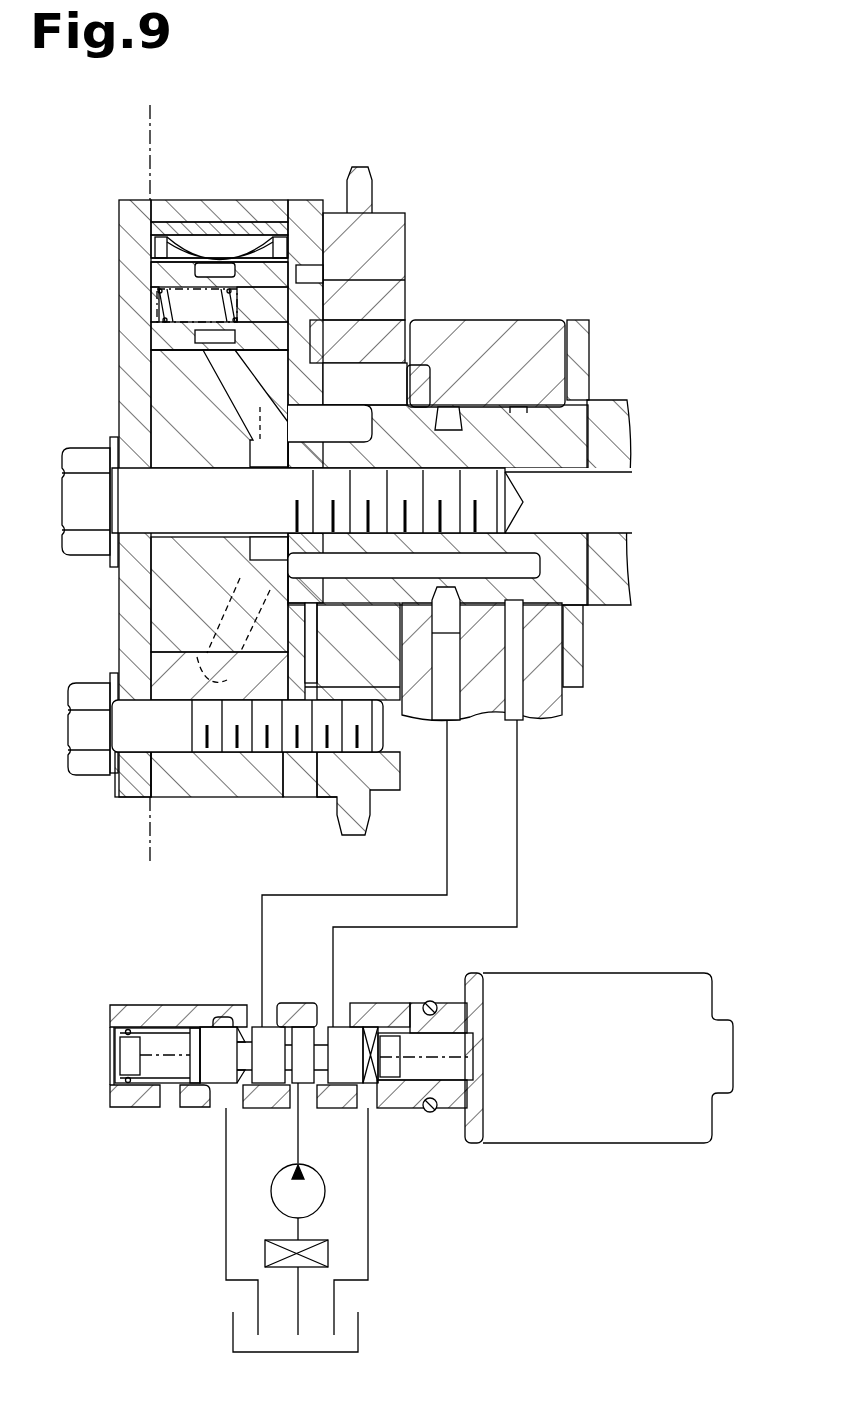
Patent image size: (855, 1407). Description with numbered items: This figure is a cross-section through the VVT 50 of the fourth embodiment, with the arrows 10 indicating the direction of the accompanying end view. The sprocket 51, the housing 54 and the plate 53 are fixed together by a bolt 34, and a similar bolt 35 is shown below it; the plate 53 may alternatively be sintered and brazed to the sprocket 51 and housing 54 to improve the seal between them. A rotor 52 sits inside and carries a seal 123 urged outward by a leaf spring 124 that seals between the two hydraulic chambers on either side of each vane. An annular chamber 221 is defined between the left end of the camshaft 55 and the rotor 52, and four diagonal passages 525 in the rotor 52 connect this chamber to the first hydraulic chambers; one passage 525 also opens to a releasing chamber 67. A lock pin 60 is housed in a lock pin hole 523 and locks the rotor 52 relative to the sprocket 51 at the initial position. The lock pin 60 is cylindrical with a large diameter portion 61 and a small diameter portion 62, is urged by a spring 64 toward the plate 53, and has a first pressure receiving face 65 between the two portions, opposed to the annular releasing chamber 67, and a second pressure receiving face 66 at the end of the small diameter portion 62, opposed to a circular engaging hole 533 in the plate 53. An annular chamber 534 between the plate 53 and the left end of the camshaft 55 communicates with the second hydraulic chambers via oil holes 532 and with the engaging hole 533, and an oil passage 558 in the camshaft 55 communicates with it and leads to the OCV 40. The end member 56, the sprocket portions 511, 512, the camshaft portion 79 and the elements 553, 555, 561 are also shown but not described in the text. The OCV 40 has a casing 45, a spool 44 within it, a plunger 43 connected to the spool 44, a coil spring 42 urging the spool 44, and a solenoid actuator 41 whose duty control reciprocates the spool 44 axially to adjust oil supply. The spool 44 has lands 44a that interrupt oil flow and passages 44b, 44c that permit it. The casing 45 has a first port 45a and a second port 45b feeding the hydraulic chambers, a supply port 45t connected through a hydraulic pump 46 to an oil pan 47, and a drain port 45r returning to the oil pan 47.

The section line 10 is at (142, 111).
The bolt 34 is at (90, 443).
The bolt 35 is at (87, 683).
The OCV 40 is at (601, 933).
The solenoid actuator 41 is at (612, 1072).
The coil spring 42 is at (160, 1040).
The plunger 43 is at (458, 1077).
The spool 44 is at (207, 1017).
The lands 44a is at (267, 1033).
The passage 44b is at (318, 1027).
The passage 44c is at (232, 1030).
The casing 45 is at (397, 1000).
The first port 45a is at (252, 1000).
The second port 45b is at (352, 1003).
The drain port 45r is at (218, 1100).
The supply port 45t is at (287, 1107).
The hydraulic pump 46 is at (315, 1168).
The oil pan 47 is at (360, 1330).
The VVT 50 is at (509, 198).
The sprocket 51 is at (405, 222).
The rotor 52 is at (163, 623).
The plate 53 is at (293, 797).
The housing 54 is at (270, 200).
The camshaft 55 is at (627, 415).
The cover 56 is at (121, 228).
The lock pin 60 is at (173, 335).
The large diameter portion 61 is at (153, 270).
The small diameter portion 62 is at (280, 318).
The spring 64 is at (152, 318).
The first pressure receiving face 65 is at (200, 347).
The second pressure receiving face 66 is at (323, 308).
The releasing chamber 67 is at (230, 342).
The journal bearing 79 is at (550, 703).
The seal 123 is at (192, 222).
The leaf spring 124 is at (177, 233).
The annular chamber 221 is at (240, 552).
The housing flange 511 is at (410, 320).
The sprocket tooth 512 is at (372, 173).
The lock pin hole 523 is at (163, 347).
The diagonal passages 525 is at (237, 407).
The oil holes 532 is at (323, 647).
The engaging hole 533 is at (327, 280).
The annular chamber 534 is at (320, 338).
The camshaft bolt bore 553 is at (510, 480).
The passage 555 is at (357, 572).
The oil passage 558 is at (410, 380).
The cover flange 561 is at (120, 587).